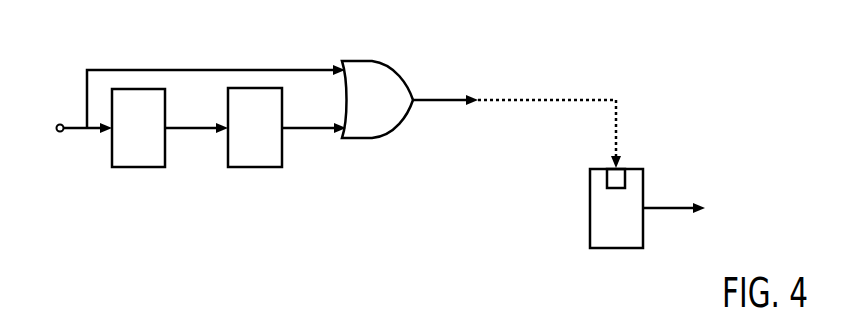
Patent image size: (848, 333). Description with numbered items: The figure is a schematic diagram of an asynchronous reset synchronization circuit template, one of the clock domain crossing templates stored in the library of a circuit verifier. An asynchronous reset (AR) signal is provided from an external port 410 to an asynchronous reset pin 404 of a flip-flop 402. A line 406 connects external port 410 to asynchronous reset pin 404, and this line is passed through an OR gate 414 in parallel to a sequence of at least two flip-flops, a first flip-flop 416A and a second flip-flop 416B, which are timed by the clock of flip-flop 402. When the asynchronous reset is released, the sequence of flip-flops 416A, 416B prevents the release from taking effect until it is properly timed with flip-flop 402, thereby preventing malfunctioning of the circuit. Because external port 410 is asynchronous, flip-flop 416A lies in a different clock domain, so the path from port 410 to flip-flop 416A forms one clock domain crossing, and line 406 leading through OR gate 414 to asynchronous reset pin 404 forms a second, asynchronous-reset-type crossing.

The flip-flop 402 is at (590, 206).
The asynchronous reset pin 404 is at (627, 178).
The line 406 is at (260, 70).
The external port 410 is at (61, 132).
The OR gate 414 is at (363, 60).
The first flip-flop 416A is at (141, 167).
The second flip-flop 416B is at (257, 167).